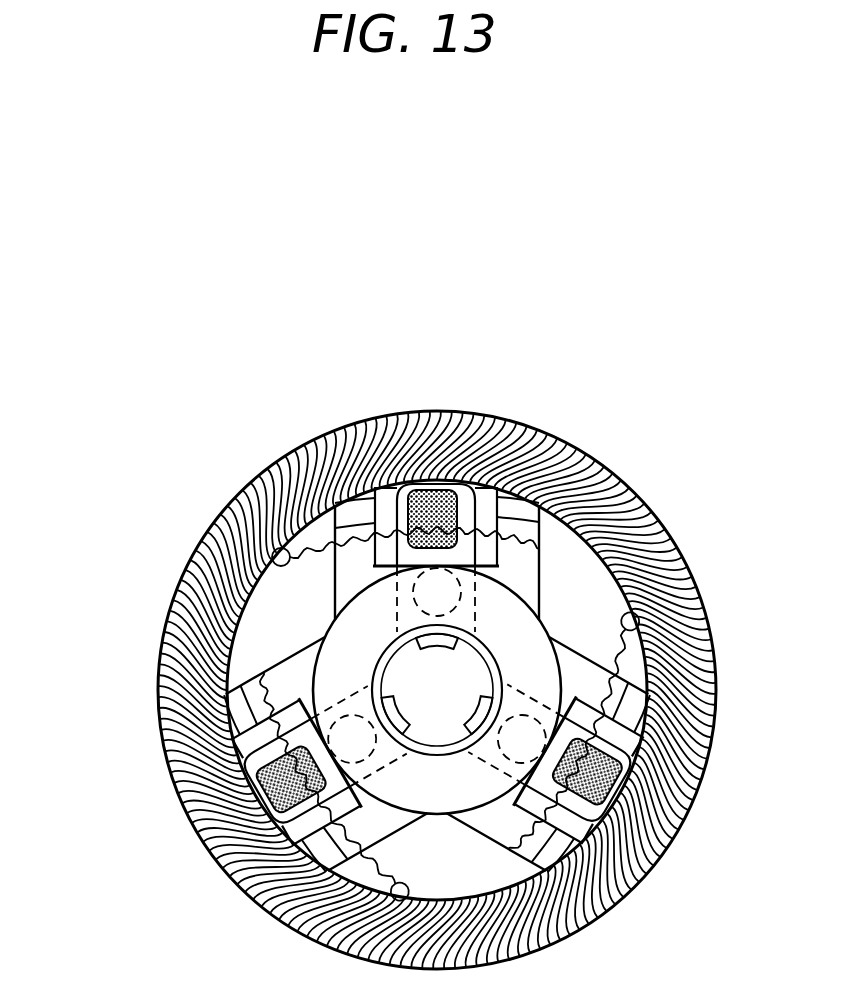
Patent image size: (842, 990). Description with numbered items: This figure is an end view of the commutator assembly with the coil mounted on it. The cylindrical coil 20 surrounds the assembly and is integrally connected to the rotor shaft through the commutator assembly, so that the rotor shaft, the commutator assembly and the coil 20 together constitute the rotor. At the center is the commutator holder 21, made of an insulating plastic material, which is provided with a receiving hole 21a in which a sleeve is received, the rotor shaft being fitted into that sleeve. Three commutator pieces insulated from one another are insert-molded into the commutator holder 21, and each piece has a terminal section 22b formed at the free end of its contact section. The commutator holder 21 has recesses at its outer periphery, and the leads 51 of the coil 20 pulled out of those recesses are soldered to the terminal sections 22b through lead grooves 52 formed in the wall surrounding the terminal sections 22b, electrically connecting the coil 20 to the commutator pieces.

The coil 20 is at (620, 533).
The commutator holder 21 is at (160, 705).
The receiving hole 21a is at (262, 627).
The terminal section 22b is at (453, 467).
The leads 51 is at (262, 585).
The lead grooves 52 is at (357, 528).